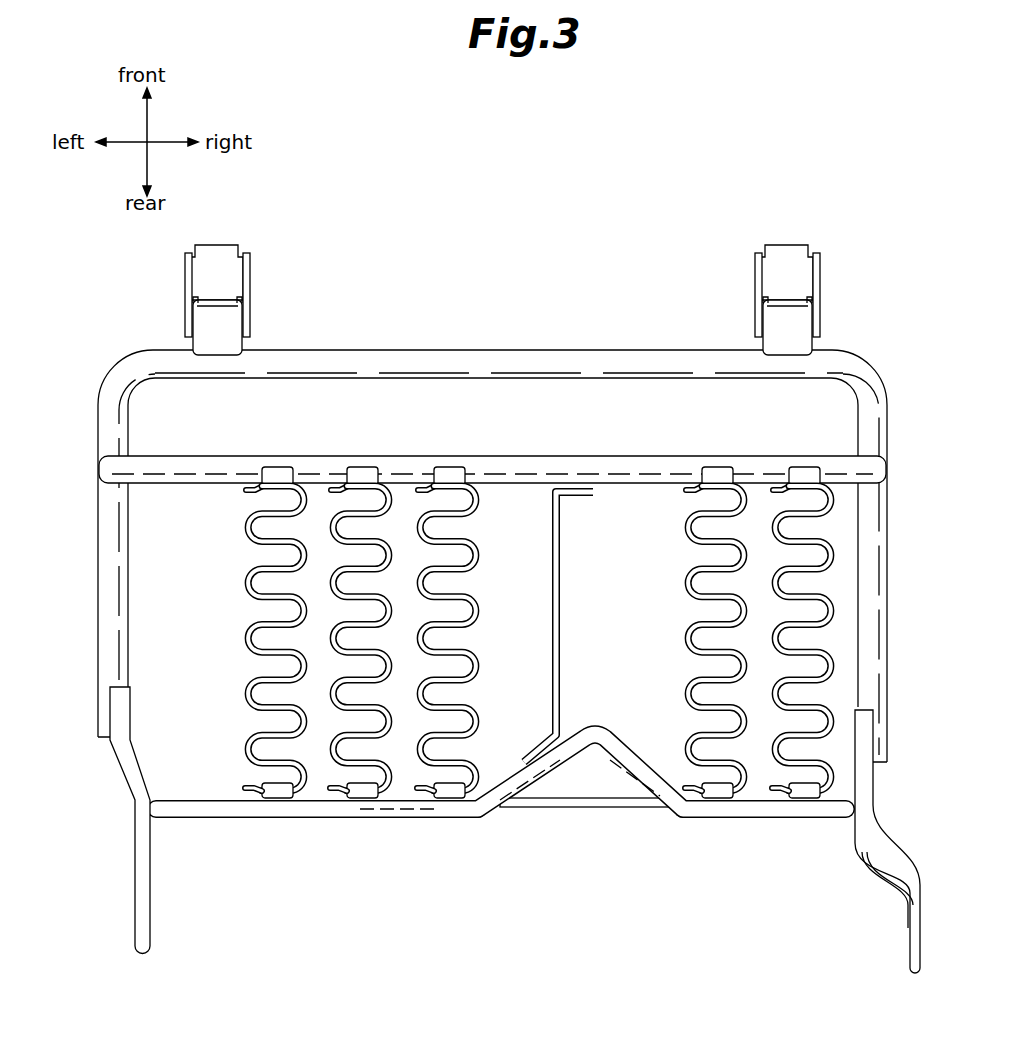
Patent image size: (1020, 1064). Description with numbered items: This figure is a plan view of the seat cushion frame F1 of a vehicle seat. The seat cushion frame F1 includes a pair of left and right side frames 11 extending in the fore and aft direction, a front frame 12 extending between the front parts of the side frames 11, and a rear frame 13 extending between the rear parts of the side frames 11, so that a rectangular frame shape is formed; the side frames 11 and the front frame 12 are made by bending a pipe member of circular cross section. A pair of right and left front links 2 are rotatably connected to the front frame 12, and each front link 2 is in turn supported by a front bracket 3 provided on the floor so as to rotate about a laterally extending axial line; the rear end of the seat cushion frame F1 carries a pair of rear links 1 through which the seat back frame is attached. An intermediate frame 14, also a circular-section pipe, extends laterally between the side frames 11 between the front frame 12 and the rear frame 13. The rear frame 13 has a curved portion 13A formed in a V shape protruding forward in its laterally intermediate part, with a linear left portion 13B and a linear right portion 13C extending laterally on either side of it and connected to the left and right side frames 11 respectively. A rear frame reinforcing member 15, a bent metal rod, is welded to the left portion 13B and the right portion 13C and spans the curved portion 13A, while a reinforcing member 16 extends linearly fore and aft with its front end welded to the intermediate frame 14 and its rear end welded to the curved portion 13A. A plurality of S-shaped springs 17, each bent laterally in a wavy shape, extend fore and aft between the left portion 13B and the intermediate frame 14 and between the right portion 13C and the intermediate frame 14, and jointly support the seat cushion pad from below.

The seat cushion frame F1 is at (541, 266).
The rear link 1 is at (137, 916).
The front link 2 is at (223, 336).
The front bracket 3 is at (222, 258).
The side frame 11 is at (99, 606).
The front frame 12 is at (401, 360).
The rear frame 13 is at (482, 826).
The curved portion 13A is at (596, 742).
The left portion 13B is at (310, 802).
The right portion 13C is at (755, 806).
The intermediate frame 14 is at (512, 475).
The rear frame reinforcing member 15 is at (603, 806).
The reinforcing member 16 is at (556, 560).
The S-shaped spring 17 is at (248, 627).